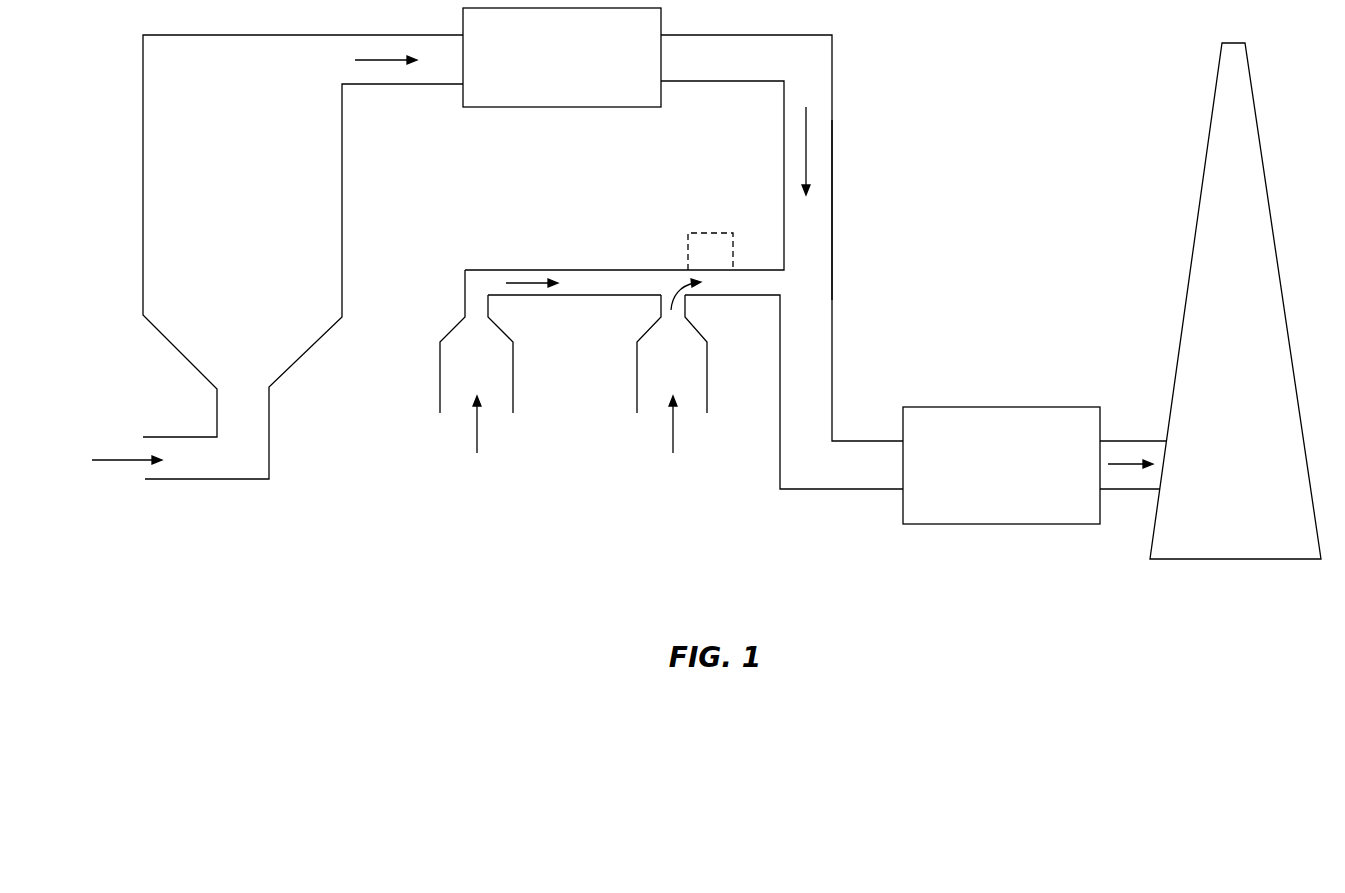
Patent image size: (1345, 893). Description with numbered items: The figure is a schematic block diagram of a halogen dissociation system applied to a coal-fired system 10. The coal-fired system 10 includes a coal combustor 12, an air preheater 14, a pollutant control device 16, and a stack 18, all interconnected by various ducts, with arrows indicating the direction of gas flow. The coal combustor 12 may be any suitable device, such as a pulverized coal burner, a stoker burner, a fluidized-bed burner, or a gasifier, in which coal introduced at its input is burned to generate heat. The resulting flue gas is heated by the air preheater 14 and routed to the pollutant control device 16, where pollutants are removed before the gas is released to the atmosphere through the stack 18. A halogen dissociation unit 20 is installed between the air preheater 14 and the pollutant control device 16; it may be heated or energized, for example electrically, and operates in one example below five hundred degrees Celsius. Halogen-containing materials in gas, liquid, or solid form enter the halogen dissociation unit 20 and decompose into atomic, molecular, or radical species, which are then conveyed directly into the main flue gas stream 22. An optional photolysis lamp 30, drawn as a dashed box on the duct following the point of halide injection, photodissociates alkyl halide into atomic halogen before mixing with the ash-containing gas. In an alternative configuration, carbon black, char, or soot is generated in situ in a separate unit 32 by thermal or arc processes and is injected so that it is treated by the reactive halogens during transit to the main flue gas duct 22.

The coal-fired system 10 is at (257, 615).
The coal combustor 12 is at (303, 257).
The air preheater 14 is at (562, 57).
The pollutant control device 16 is at (1001, 465).
The stack 18 is at (1235, 301).
The halogen dissociation unit 20 is at (707, 381).
The main flue gas stream 22 is at (813, 266).
The photolysis lamp 30 is at (703, 230).
The separate unit 32 is at (513, 381).